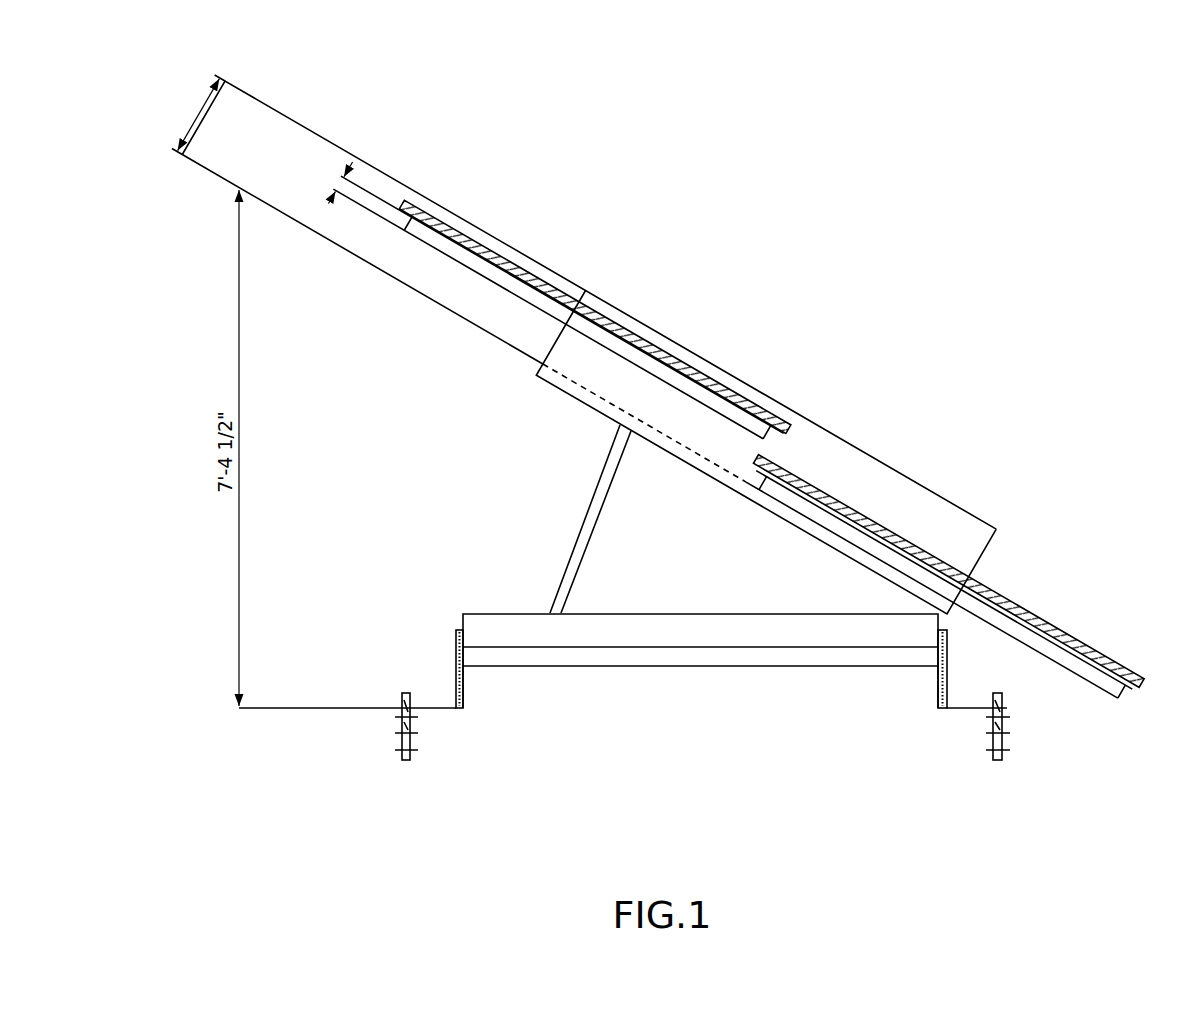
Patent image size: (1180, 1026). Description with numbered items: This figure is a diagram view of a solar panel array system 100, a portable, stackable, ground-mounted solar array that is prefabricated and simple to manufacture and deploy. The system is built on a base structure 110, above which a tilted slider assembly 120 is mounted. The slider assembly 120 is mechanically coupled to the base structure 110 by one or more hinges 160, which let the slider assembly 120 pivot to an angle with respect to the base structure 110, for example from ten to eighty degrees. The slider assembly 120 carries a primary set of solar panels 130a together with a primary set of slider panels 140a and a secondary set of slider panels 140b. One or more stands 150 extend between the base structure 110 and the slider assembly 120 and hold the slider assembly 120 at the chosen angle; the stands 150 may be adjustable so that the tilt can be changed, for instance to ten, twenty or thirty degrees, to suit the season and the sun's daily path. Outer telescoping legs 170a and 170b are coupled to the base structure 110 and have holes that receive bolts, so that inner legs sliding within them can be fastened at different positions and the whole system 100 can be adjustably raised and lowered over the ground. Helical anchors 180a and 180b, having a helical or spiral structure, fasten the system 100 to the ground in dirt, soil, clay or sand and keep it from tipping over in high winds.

The solar panel array system 100 is at (452, 48).
The base structure 110 is at (683, 642).
The slider assembly 120 is at (800, 412).
The primary set of solar panels 130a is at (612, 296).
The primary set of slider panels 140a is at (502, 281).
The secondary set of slider panels 140b is at (1057, 663).
The stand 150 is at (587, 517).
The hinge 160 is at (922, 607).
The outer telescoping leg 170a is at (468, 690).
The outer telescoping leg 170b is at (932, 692).
The helical anchor 180a is at (420, 742).
The helical anchor 180b is at (982, 743).